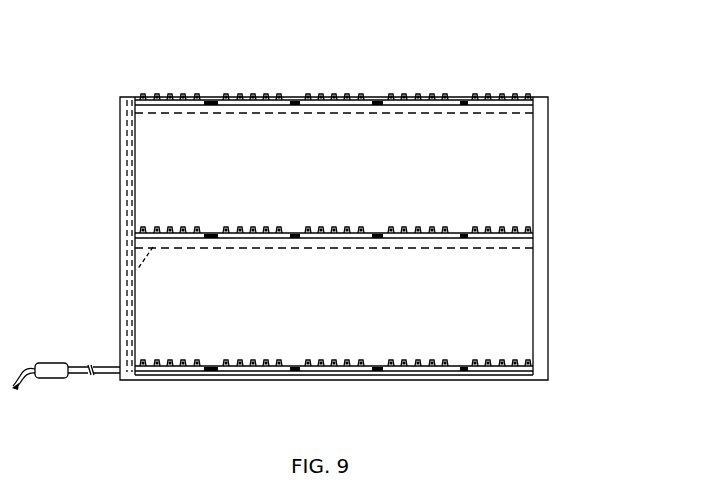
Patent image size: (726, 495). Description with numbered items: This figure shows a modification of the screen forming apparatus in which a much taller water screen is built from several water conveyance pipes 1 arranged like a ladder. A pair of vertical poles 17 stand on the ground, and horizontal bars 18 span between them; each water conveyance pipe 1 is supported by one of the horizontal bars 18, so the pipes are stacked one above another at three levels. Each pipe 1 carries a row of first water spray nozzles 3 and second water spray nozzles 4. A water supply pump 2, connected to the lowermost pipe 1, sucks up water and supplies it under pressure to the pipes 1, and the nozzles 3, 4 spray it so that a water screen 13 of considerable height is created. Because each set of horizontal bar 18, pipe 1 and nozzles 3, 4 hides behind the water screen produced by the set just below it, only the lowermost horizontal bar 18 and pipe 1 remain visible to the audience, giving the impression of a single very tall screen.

The water conveyance pipe 1 is at (522, 90).
The water supply pump 2 is at (55, 370).
The first water spray nozzle 3 is at (153, 93).
The second water spray nozzle 4 is at (172, 93).
The water screen 13 is at (498, 152).
The vertical pole 17 is at (124, 246).
The horizontal bar 18 is at (127, 138).